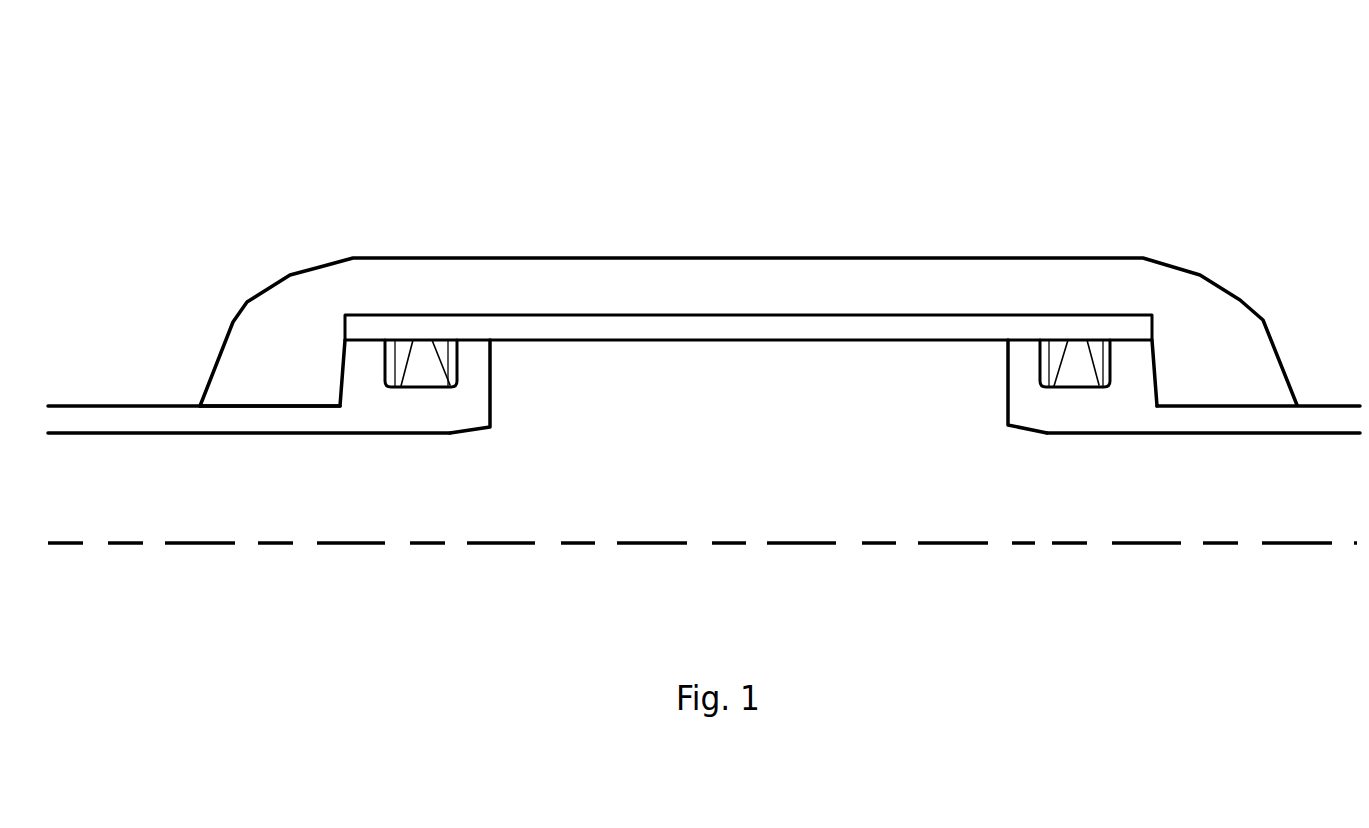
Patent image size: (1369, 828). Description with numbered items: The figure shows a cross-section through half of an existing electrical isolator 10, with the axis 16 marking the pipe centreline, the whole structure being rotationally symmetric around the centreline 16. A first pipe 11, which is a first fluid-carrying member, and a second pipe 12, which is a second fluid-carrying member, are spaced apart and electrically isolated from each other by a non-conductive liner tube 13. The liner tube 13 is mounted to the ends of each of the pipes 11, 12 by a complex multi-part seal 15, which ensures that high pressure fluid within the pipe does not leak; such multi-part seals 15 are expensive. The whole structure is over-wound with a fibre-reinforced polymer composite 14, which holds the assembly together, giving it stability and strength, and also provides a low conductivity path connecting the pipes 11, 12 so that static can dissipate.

The electrical isolator 10 is at (983, 144).
The first pipe 11 is at (105, 415).
The second pipe 12 is at (1023, 412).
The non-conductive liner tube 13 is at (965, 333).
The fibre-reinforced polymer composite 14 is at (440, 285).
The multi-part seal 15 is at (430, 373).
The axis 16 is at (877, 542).